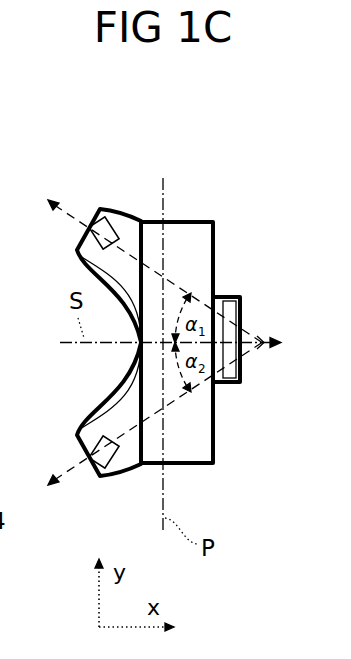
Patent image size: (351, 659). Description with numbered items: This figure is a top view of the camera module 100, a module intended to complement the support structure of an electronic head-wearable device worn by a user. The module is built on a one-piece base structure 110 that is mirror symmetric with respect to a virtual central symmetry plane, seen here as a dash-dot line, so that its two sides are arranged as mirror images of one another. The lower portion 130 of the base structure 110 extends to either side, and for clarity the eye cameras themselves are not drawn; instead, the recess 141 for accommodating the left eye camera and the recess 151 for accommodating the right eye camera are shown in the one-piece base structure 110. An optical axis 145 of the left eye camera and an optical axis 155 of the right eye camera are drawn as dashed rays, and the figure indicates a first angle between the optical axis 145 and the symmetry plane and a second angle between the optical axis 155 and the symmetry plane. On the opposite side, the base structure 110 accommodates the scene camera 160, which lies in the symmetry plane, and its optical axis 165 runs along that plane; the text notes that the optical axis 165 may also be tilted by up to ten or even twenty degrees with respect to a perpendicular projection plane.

The camera module 100 is at (167, 99).
The one-piece base structure 110 is at (188, 195).
The lower portion 130 is at (95, 203).
The recess 141 is at (111, 214).
The optical axis 145 is at (139, 271).
The recess 151 is at (110, 470).
The optical axis 155 is at (63, 467).
The scene camera 160 is at (227, 400).
The optical axis 165 is at (256, 332).